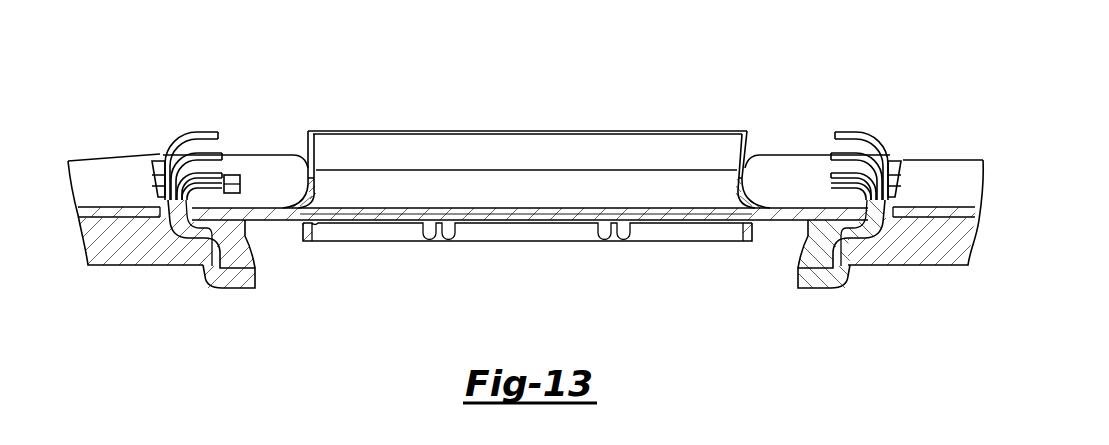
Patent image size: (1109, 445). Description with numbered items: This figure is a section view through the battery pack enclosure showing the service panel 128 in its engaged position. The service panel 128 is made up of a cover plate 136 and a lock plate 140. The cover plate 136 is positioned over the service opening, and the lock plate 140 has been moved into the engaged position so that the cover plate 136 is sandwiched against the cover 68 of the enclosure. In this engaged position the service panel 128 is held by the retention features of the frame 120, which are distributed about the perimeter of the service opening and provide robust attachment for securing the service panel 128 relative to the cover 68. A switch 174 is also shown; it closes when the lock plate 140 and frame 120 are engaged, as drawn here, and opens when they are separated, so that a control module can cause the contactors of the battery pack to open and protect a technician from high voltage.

The cover 68 is at (912, 258).
The frame 120 is at (858, 136).
The service panel 128 is at (732, 98).
The cover plate 136 is at (553, 203).
The lock plate 140 is at (647, 131).
The switch 174 is at (233, 174).